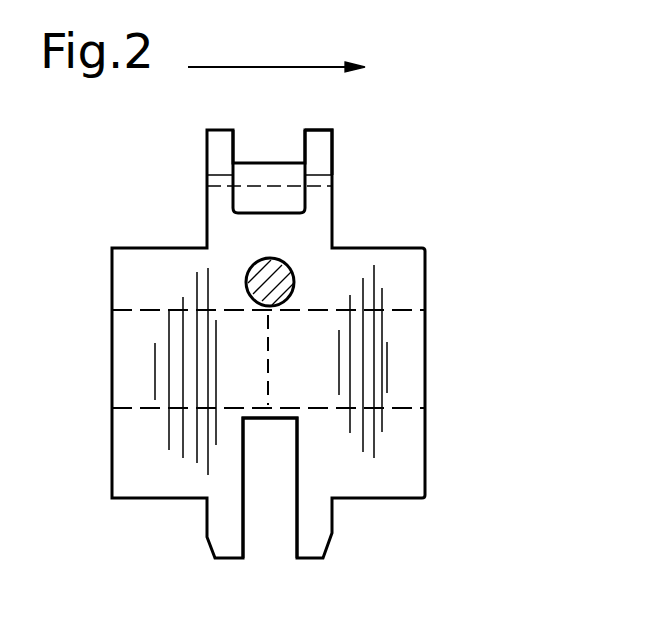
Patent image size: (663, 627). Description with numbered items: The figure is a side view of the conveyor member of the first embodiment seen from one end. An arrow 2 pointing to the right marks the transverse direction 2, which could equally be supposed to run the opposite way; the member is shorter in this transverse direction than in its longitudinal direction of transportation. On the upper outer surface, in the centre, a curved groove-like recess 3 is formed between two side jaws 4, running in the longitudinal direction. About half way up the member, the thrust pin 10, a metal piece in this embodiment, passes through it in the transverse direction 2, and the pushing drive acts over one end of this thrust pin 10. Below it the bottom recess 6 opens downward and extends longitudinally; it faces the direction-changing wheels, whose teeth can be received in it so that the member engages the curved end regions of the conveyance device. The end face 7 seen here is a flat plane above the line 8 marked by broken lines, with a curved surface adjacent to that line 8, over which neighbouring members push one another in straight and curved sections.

The transverse direction 2 is at (220, 67).
The groove-like recess 3 is at (248, 162).
The side jaws 4 is at (317, 157).
The bottom recess 6 is at (258, 499).
The end face 7 is at (357, 360).
The line 8 is at (400, 410).
The thrust pin 10 is at (288, 266).